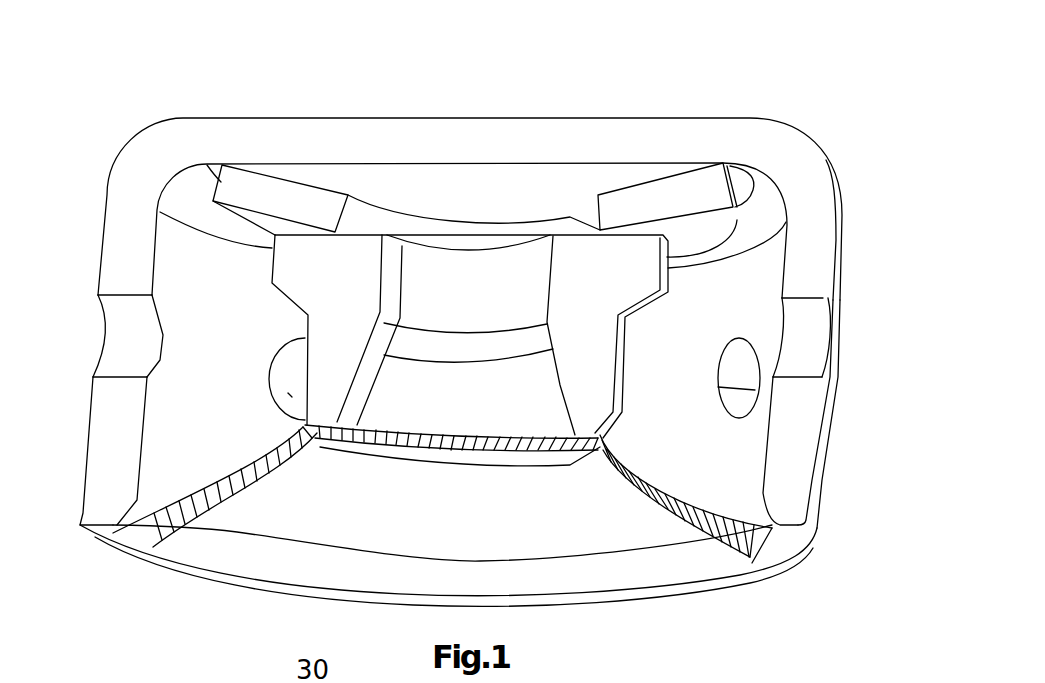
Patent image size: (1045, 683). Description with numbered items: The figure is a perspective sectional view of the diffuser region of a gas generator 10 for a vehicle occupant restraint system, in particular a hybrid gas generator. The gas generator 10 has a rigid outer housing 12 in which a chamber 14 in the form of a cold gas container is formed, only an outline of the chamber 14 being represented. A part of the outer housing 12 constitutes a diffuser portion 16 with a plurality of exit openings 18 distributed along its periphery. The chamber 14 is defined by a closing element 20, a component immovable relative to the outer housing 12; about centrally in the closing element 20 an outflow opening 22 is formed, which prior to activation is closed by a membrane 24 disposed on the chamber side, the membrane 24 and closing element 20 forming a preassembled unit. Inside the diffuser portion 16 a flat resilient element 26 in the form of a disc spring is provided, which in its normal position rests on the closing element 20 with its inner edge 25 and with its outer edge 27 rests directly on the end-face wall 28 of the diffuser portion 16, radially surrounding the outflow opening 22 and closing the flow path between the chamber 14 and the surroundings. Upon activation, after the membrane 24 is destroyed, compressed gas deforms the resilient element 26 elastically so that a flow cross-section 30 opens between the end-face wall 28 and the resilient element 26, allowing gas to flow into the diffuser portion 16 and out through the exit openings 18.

The gas generator 10 is at (867, 217).
The outer housing 12 is at (773, 485).
The chamber 14 is at (388, 516).
The diffuser portion 16 is at (800, 407).
The exit openings 18 is at (280, 375).
The closing element 20 is at (593, 340).
The outflow opening 22 is at (535, 388).
The membrane 24 is at (538, 452).
The inner edge 25 is at (597, 215).
The resilient element 26 is at (668, 198).
The outer edge 27 is at (226, 167).
The end-face wall 28 is at (390, 127).
The flow cross-section 30 is at (723, 163).